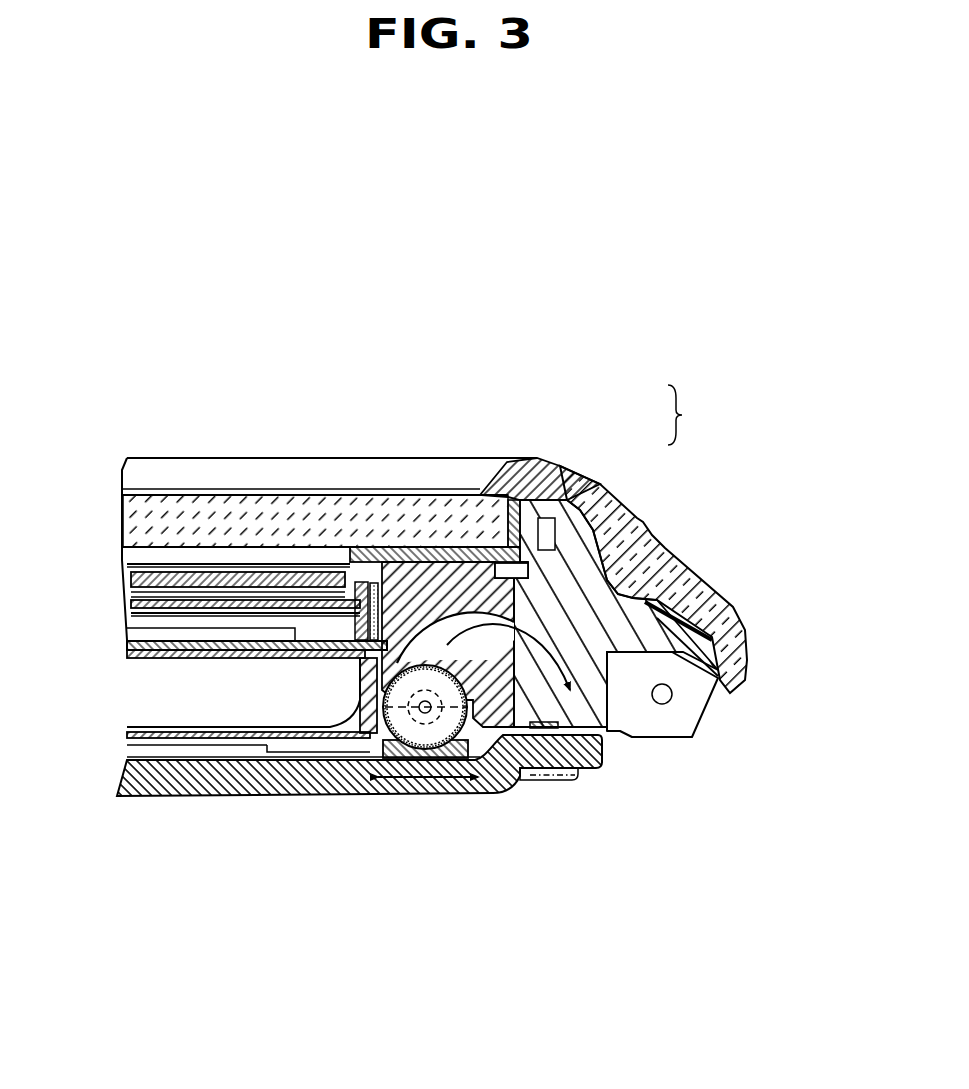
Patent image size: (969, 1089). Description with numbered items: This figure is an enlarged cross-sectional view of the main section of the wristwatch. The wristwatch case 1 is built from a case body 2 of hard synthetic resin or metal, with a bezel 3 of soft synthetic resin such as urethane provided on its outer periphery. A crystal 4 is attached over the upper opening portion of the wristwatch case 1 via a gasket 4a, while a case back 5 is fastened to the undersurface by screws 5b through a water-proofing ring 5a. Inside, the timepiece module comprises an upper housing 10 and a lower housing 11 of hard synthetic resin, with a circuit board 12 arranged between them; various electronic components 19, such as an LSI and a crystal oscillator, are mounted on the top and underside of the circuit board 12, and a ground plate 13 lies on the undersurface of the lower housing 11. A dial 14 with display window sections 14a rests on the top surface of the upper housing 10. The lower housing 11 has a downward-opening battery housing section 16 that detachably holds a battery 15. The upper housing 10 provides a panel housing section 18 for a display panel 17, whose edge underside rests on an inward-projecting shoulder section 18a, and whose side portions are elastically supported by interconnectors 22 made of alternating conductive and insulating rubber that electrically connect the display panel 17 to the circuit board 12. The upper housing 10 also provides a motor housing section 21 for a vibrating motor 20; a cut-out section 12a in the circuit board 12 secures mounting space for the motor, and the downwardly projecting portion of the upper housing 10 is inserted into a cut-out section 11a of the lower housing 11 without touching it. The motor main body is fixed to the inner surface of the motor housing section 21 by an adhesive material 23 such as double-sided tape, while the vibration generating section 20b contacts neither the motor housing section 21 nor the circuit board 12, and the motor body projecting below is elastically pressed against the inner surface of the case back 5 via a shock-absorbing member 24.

The wristwatch case 1 is at (756, 415).
The case body 2 is at (573, 558).
The bezel 3 is at (537, 473).
The crystal 4 is at (150, 530).
The gasket 4a is at (537, 460).
The case back 5 is at (277, 775).
The water-proofing ring 5a is at (600, 740).
The screws 5b is at (560, 783).
The upper housing 10 is at (458, 593).
The lower housing 11 is at (186, 656).
The cut-out section 11a is at (377, 735).
The circuit board 12 is at (253, 656).
The cut-out section 12a is at (417, 560).
The ground plate 13 is at (147, 740).
The dial 14 is at (400, 557).
The display window sections 14a is at (208, 557).
The battery 15 is at (243, 710).
The battery housing section 16 is at (345, 735).
The display panel 17 is at (182, 632).
The panel housing section 18 is at (138, 620).
The shoulder section 18a is at (375, 598).
The electronic components 19 is at (165, 633).
The vibrating motor 20 is at (435, 735).
The vibration generating section 20b is at (470, 740).
The motor housing section 21 is at (514, 622).
The interconnectors 22 is at (357, 560).
The adhesive material 23 is at (468, 690).
The shock-absorbing member 24 is at (415, 745).